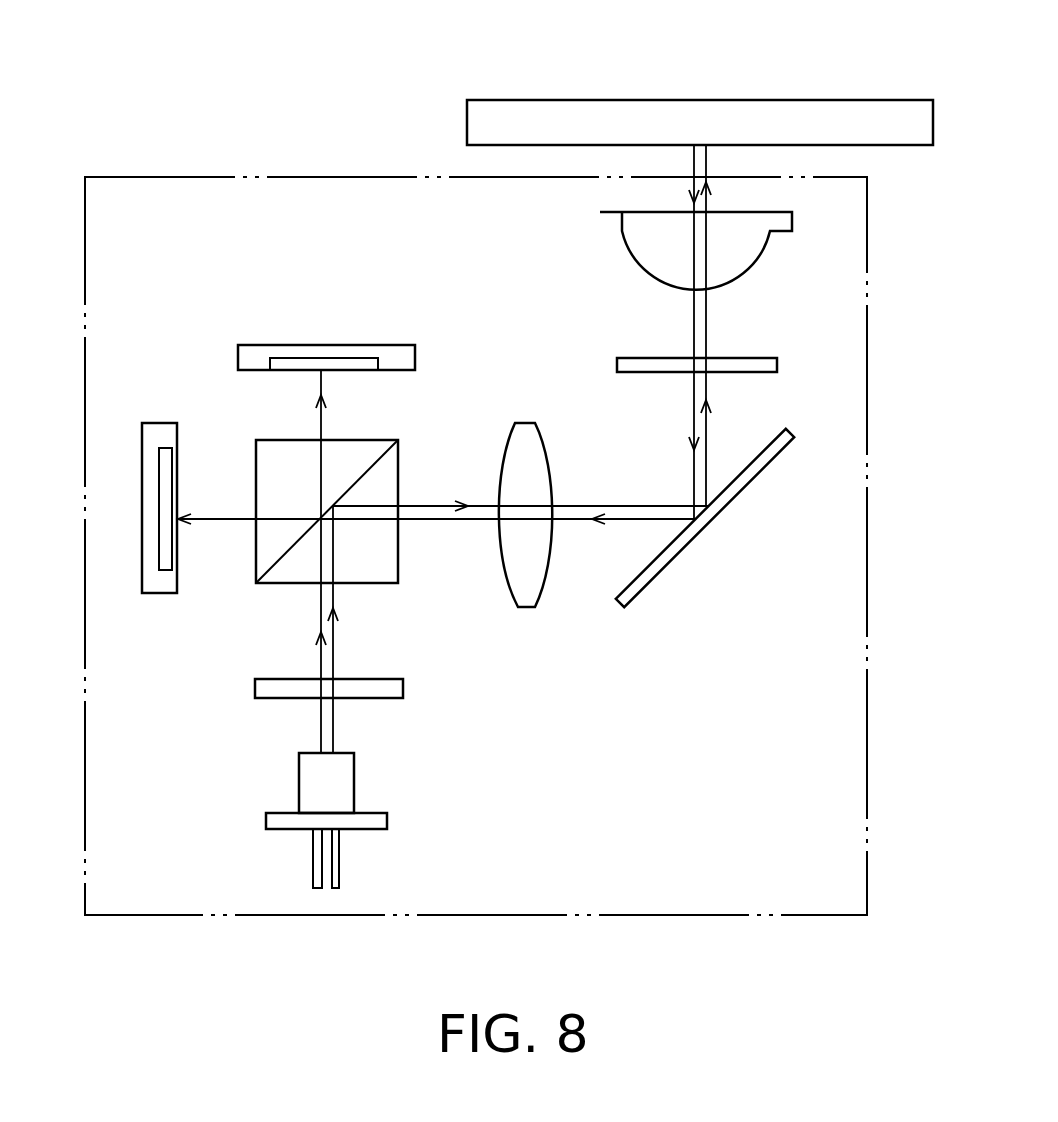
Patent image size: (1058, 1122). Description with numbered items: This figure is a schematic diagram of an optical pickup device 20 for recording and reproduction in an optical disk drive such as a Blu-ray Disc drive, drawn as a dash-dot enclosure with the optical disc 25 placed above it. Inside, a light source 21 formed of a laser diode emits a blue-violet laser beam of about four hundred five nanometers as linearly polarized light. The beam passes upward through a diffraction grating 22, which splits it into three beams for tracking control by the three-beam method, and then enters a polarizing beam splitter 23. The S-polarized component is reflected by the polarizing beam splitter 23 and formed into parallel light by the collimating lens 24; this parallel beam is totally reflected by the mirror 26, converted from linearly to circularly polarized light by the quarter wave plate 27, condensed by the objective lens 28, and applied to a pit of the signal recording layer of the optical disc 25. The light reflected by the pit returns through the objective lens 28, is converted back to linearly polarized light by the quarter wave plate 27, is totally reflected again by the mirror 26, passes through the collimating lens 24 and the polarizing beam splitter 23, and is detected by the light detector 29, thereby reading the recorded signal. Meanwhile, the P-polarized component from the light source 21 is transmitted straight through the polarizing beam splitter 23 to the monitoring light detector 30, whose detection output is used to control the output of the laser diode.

The optical pickup device 20 is at (343, 177).
The light source 21 is at (355, 795).
The diffraction grating 22 is at (403, 689).
The polarizing beam splitter 23 is at (400, 455).
The collimating lens 24 is at (526, 423).
The optical disc 25 is at (845, 100).
The mirror 26 is at (778, 453).
The quarter wave plate 27 is at (777, 364).
The objective lens 28 is at (625, 245).
The light detector 29 is at (158, 423).
The monitoring light detector 30 is at (390, 345).